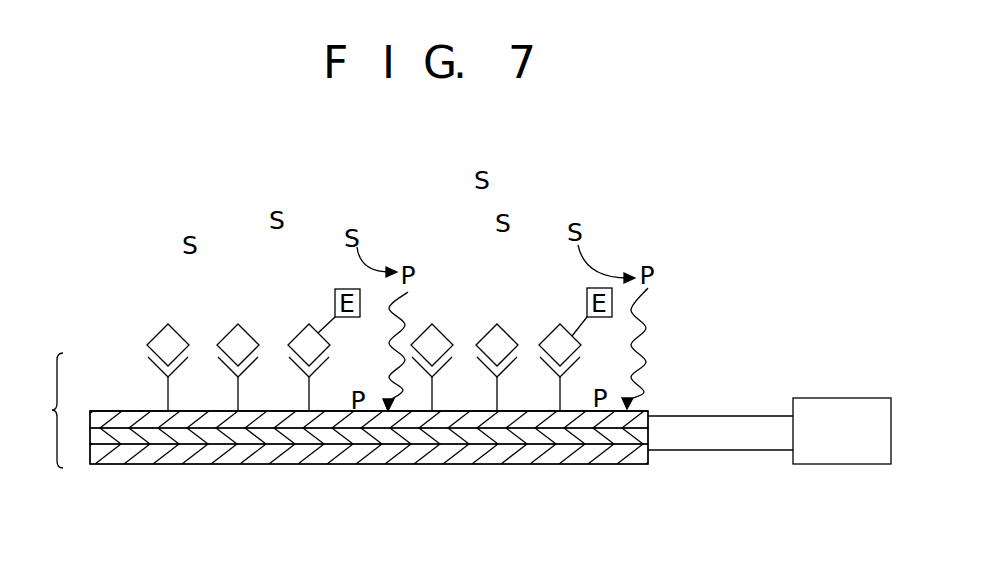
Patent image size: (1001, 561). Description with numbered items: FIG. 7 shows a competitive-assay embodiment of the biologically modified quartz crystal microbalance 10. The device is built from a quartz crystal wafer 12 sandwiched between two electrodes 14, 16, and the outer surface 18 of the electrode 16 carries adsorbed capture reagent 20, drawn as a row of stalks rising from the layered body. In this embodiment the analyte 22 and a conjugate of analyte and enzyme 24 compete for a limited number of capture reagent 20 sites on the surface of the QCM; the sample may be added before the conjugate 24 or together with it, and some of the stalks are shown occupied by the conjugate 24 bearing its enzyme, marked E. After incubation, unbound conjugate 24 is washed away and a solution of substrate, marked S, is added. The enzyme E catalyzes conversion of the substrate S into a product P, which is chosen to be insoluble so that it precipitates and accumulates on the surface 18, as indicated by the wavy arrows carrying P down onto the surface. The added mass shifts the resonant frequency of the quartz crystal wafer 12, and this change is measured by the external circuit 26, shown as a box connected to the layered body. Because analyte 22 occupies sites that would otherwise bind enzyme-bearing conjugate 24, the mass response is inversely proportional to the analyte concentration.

The biologically modified quartz crystal microbalance 10 is at (372, 422).
The quartz crystal wafer 12 is at (163, 438).
The electrode 14 is at (255, 455).
The electrode 16 is at (638, 417).
The surface 18 is at (630, 410).
The capture reagent 20 is at (167, 393).
The analyte 22 is at (155, 338).
The conjugate of analyte and enzyme 24 is at (302, 333).
The external circuit 26 is at (842, 452).